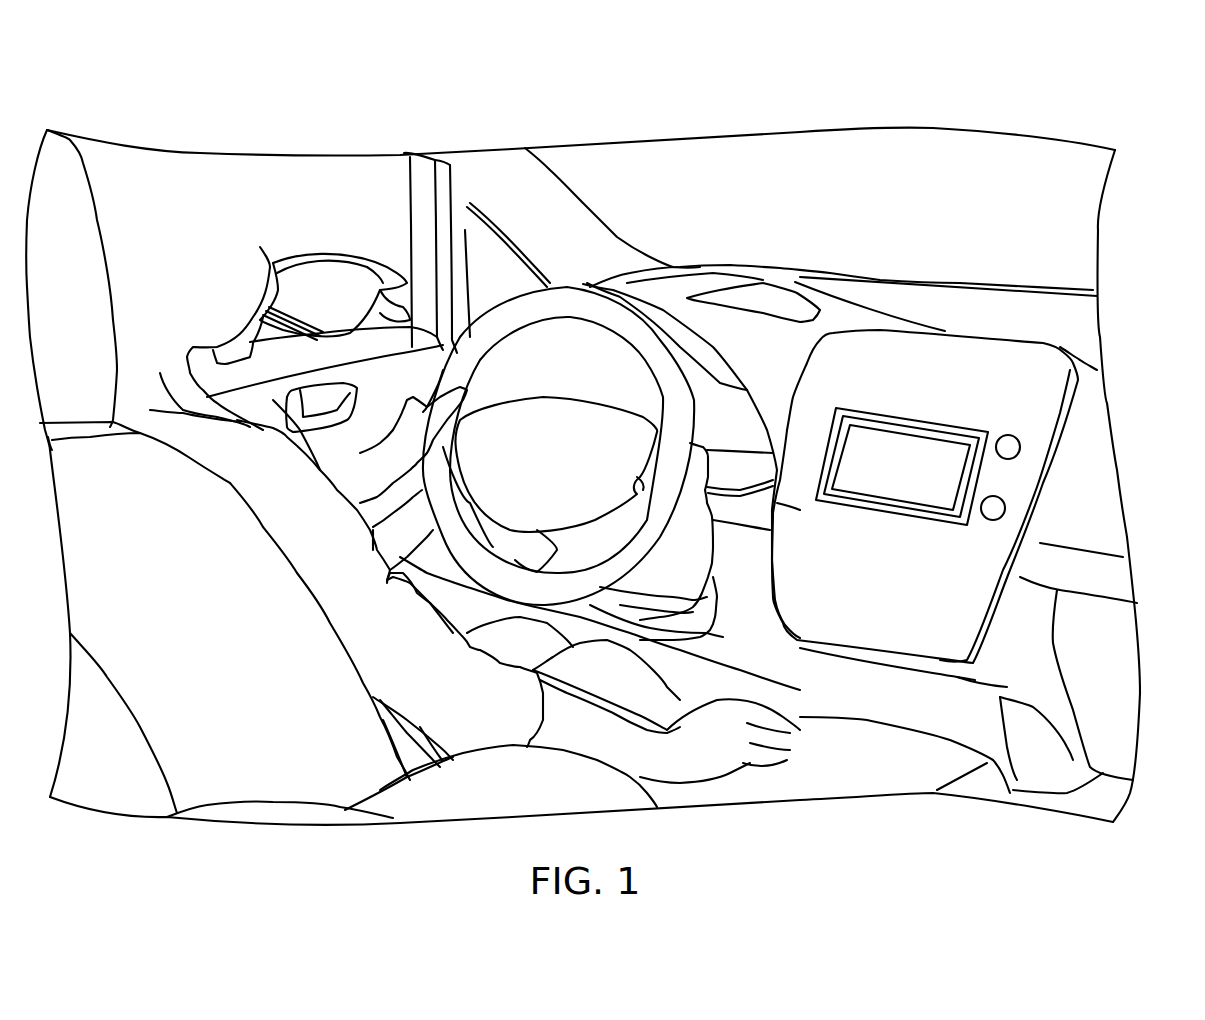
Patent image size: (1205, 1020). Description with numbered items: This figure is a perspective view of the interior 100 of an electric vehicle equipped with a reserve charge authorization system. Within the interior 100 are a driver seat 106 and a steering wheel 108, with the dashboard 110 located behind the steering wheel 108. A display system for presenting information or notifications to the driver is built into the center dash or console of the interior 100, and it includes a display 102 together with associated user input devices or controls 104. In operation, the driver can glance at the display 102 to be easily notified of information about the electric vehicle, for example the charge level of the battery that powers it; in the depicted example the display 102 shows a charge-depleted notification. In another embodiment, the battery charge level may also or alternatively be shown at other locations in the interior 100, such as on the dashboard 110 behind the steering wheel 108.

The interior 100 is at (1105, 118).
The display 102 is at (917, 444).
The user input devices or controls 104 is at (1010, 446).
The driver seat 106 is at (237, 583).
The steering wheel 108 is at (670, 383).
The dashboard 110 is at (610, 350).